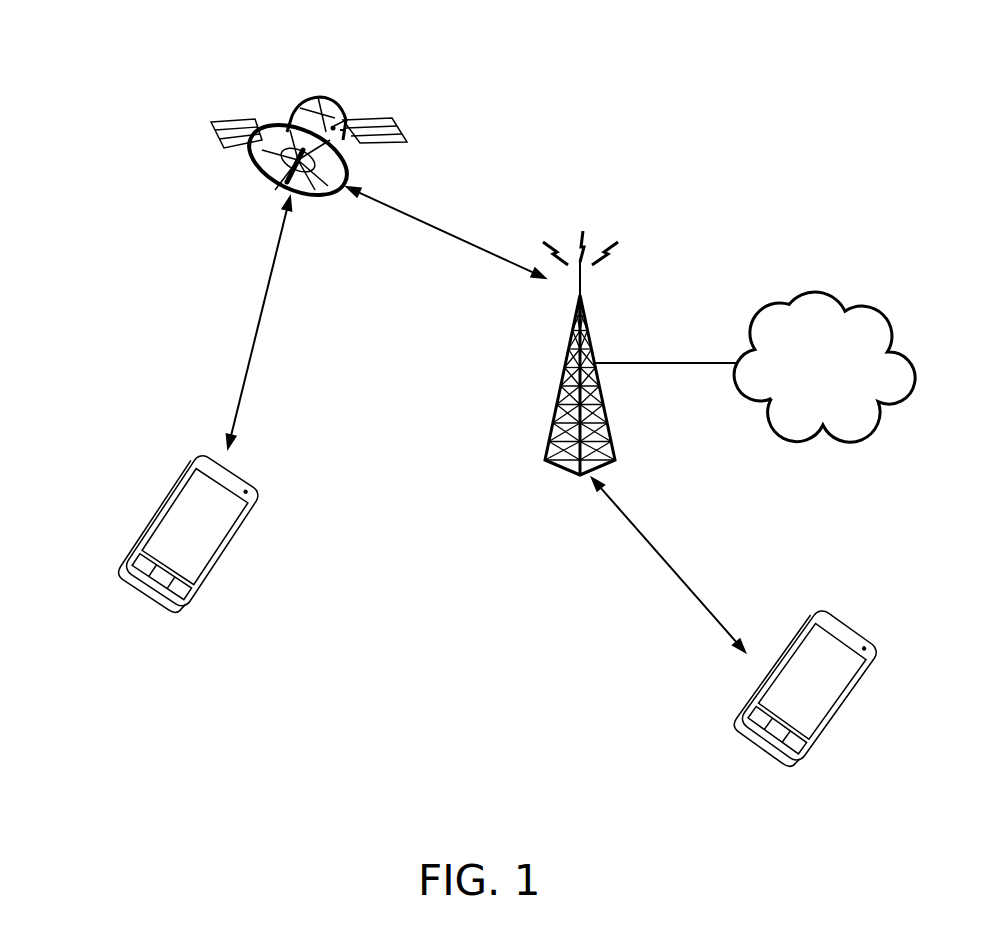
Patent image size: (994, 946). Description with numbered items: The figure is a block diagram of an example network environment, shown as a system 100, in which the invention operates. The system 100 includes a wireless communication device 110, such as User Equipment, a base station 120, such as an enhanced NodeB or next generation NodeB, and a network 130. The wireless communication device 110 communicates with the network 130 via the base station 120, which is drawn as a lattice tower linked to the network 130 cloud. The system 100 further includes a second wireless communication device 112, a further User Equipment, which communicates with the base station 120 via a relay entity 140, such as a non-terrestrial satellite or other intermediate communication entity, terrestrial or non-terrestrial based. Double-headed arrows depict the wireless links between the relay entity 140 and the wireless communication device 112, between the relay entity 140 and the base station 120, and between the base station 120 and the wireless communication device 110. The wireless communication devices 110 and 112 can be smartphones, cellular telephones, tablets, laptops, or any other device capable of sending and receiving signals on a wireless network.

The system 100 is at (140, 55).
The wireless communication device 110 is at (735, 722).
The wireless communication device 112 is at (113, 568).
The base station 120 is at (563, 383).
The network 130 is at (815, 300).
The relay entity 140 is at (330, 113).